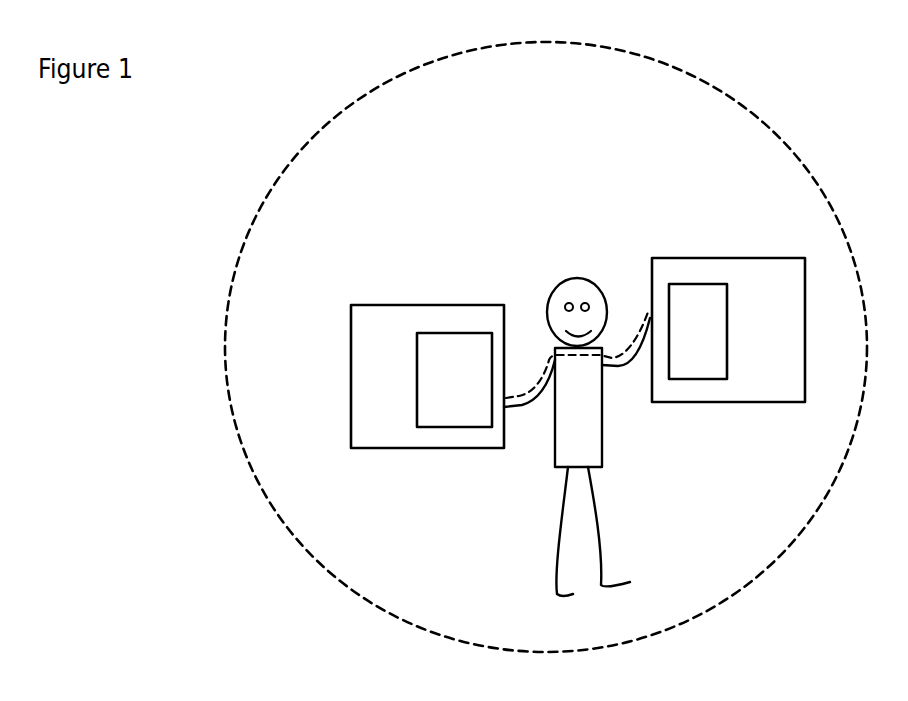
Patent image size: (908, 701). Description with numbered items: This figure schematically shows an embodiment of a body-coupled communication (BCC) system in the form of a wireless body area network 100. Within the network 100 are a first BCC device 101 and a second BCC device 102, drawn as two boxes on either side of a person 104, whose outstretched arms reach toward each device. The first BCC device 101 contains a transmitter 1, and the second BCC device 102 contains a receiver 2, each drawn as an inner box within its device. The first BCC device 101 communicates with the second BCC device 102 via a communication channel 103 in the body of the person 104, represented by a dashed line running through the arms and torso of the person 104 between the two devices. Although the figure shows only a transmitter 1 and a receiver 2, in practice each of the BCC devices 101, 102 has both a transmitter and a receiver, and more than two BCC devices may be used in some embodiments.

The wireless body area network 100 is at (228, 300).
The first BCC device 101 is at (367, 305).
The transmitter 1 is at (471, 405).
The second BCC device 102 is at (688, 258).
The receiver 2 is at (697, 356).
The communication channel 103 is at (542, 357).
The person 104 is at (578, 403).